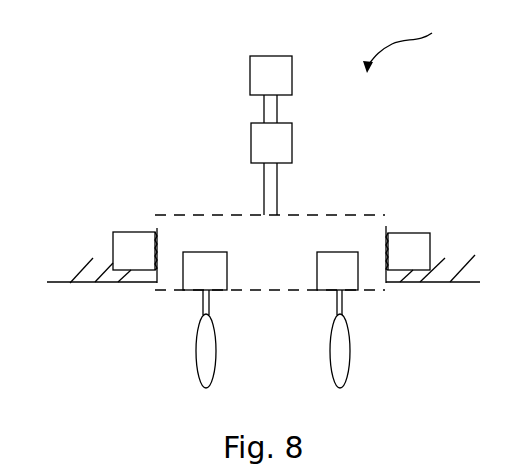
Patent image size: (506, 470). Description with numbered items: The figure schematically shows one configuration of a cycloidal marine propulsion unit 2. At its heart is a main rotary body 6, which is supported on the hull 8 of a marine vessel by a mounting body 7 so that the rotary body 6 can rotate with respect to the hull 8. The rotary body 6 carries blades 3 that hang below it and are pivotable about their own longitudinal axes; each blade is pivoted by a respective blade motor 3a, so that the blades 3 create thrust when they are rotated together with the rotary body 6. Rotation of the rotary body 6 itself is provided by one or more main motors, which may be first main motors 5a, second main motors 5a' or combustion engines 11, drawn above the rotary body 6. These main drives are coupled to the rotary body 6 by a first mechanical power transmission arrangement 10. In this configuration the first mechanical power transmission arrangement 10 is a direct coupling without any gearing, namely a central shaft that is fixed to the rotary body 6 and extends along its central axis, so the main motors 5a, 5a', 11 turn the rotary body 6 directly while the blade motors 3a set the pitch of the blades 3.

The cycloidal marine propulsion unit 2 is at (406, 42).
The blades 3 is at (197, 362).
The blade motors 3a is at (227, 280).
The first main motors 5a is at (237, 66).
The second main motors 5a' is at (314, 134).
The main rotary body 6 is at (362, 215).
The mounting body 7 is at (118, 232).
The hull 8 is at (72, 283).
The first mechanical power transmission arrangement 10 is at (264, 193).
The combustion engines 11 is at (280, 100).